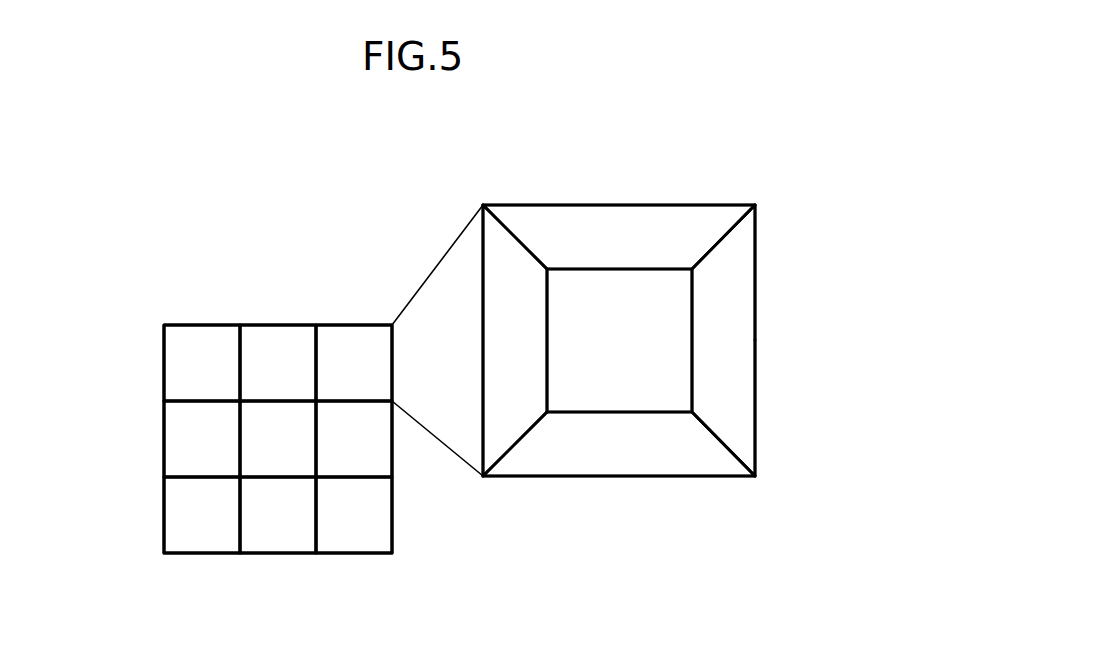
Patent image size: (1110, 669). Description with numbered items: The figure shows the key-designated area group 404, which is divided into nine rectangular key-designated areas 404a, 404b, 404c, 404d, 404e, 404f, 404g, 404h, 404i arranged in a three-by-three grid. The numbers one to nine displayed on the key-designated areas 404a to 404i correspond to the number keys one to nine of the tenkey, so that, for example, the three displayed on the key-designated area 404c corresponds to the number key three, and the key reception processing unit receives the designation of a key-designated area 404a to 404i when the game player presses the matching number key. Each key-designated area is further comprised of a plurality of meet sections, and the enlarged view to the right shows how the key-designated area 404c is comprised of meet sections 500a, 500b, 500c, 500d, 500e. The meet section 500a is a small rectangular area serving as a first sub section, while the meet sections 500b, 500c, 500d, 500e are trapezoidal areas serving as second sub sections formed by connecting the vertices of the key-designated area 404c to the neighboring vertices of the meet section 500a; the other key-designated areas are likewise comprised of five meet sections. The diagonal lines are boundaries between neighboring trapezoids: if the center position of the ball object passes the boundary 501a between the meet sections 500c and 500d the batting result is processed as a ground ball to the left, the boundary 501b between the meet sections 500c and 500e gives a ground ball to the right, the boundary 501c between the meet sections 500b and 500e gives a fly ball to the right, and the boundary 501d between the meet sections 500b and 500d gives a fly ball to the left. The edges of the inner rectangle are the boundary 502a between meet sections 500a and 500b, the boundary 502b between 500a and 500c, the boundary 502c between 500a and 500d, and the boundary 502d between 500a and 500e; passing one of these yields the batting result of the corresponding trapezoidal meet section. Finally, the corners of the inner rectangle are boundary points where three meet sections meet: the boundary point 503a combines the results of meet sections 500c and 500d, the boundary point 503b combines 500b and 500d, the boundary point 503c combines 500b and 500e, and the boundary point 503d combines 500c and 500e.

The key-designated area group 404 is at (233, 270).
The key-designated area 404a is at (188, 335).
The key-designated area 404b is at (258, 334).
The key-designated area 404c is at (333, 332).
The key-designated area 404d is at (178, 435).
The key-designated area 404e is at (303, 464).
The key-designated area 404f is at (380, 463).
The key-designated area 404g is at (178, 485).
The key-designated area 404h is at (260, 538).
The key-designated area 404i is at (373, 538).
The meet section 500a is at (663, 312).
The meet section 500b is at (670, 220).
The meet section 500c is at (633, 453).
The meet section 500d is at (498, 260).
The meet section 500e is at (732, 362).
The boundary 501a is at (507, 453).
The boundary 501b is at (727, 453).
The boundary 501c is at (733, 237).
The boundary 501d is at (513, 233).
The boundary 502a is at (627, 270).
The boundary 502b is at (597, 415).
The boundary 502c is at (543, 322).
The boundary 502d is at (693, 327).
The boundary point 503a is at (548, 417).
The boundary point 503b is at (548, 269).
The boundary point 503c is at (692, 268).
The boundary point 503d is at (692, 412).